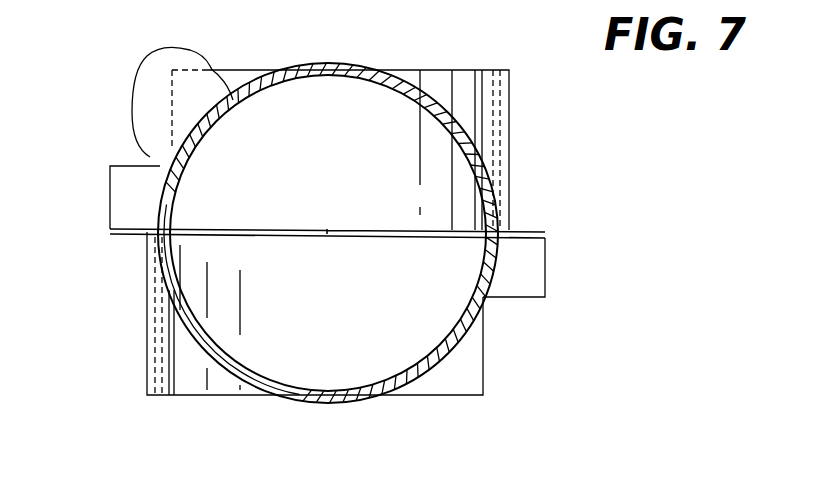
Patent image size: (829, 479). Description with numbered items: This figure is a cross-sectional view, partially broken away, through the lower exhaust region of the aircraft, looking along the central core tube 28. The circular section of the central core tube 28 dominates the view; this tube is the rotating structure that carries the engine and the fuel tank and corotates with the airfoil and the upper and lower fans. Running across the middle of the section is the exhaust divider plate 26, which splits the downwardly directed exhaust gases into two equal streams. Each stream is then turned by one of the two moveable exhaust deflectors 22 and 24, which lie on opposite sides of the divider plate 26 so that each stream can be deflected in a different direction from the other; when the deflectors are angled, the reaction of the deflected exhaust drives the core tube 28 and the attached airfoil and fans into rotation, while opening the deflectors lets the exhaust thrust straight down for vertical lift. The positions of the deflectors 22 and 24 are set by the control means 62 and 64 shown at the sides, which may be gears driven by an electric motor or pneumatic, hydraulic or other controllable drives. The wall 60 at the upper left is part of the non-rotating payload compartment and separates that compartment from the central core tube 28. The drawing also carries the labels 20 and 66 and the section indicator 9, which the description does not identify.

The clamp assembly 20 is at (365, 476).
The moveable exhaust deflector 22 is at (457, 397).
The moveable exhaust deflector 24 is at (266, 66).
The exhaust divider plate 26 is at (355, 230).
The central core tube 28 is at (423, 96).
The wall 60 is at (193, 92).
The control means 62 is at (110, 188).
The control means 64 is at (545, 297).
The fastener 66 is at (277, 474).
The section line 9- 9 is at (79, 205).